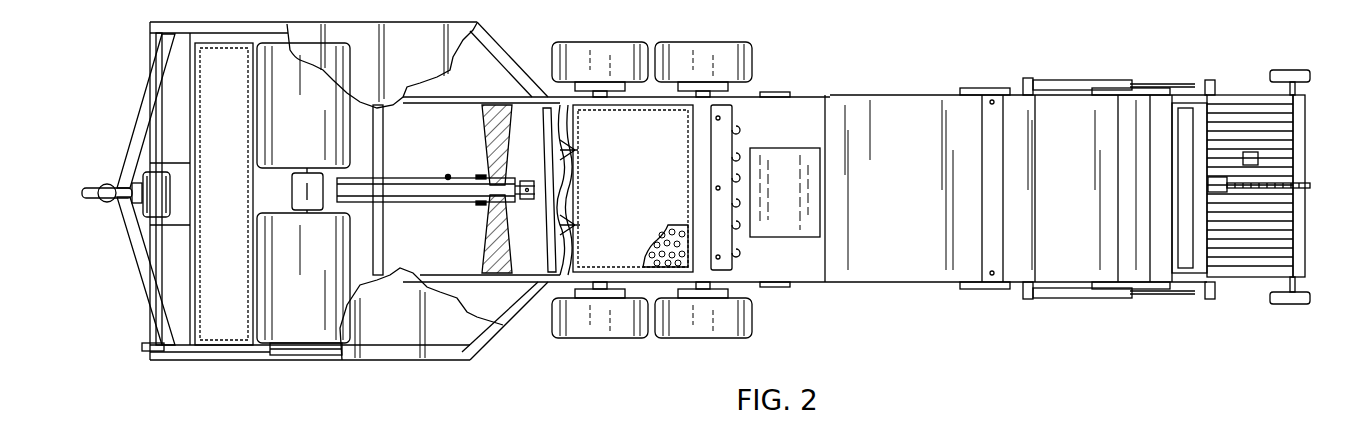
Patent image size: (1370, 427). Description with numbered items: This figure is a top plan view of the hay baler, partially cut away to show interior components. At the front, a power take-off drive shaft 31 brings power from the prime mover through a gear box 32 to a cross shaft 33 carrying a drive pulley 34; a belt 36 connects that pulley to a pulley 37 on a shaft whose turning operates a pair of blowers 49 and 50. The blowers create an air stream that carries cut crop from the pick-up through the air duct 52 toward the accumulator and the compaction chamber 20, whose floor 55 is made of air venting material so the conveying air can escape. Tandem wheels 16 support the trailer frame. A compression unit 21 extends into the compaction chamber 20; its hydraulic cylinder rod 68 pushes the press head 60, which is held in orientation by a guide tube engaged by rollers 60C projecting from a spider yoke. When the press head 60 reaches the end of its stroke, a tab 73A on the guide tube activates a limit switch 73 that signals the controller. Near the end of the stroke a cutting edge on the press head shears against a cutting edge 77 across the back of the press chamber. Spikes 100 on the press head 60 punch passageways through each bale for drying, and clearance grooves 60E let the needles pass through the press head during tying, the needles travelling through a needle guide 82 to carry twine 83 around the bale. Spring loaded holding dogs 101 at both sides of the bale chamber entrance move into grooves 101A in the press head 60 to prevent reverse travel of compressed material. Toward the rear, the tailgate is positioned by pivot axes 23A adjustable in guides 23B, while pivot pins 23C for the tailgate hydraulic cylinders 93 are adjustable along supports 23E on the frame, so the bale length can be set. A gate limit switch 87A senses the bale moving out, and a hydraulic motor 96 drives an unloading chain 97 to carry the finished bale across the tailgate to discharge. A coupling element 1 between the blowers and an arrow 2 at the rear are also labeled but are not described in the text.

The coupling 1 is at (307, 190).
The direction of travel arrow 2 is at (1327, 177).
The tandem wheels 16 is at (675, 50).
The compaction chamber 20 is at (633, 188).
The compression unit 21 is at (426, 206).
The pivot axes 23A is at (1160, 86).
The guides 23B is at (1137, 88).
The pivot pins 23C is at (1028, 78).
The supports 23E is at (996, 90).
The power take-off drive shaft 31 is at (101, 203).
The gear box 32 is at (160, 175).
The cross shaft 33 is at (162, 248).
The drive pulley 34 is at (148, 343).
The belt 36 is at (238, 352).
The pulley 37 is at (293, 355).
The blower 49 is at (303, 105).
The blower 50 is at (303, 278).
The air duct 52 is at (224, 194).
The floor 55 is at (690, 267).
The press head 60 is at (550, 250).
The rollers 60C is at (485, 176).
The clearance grooves 60E is at (572, 166).
The cylinder rod 68 is at (527, 199).
The limit switch 73 is at (448, 177).
The tab 73A is at (376, 178).
The cutting edge 77 is at (690, 162).
The needle guide 82 is at (738, 132).
The twine 83 is at (740, 252).
The gate limit switch 87A is at (1258, 157).
The hydraulic cylinders 93 is at (1075, 82).
The hydraulic motor 96 is at (1230, 192).
The unloading chain 97 is at (1310, 185).
The spikes 100 is at (582, 148).
The holding dogs 101 is at (785, 92).
The grooves 101A is at (548, 95).